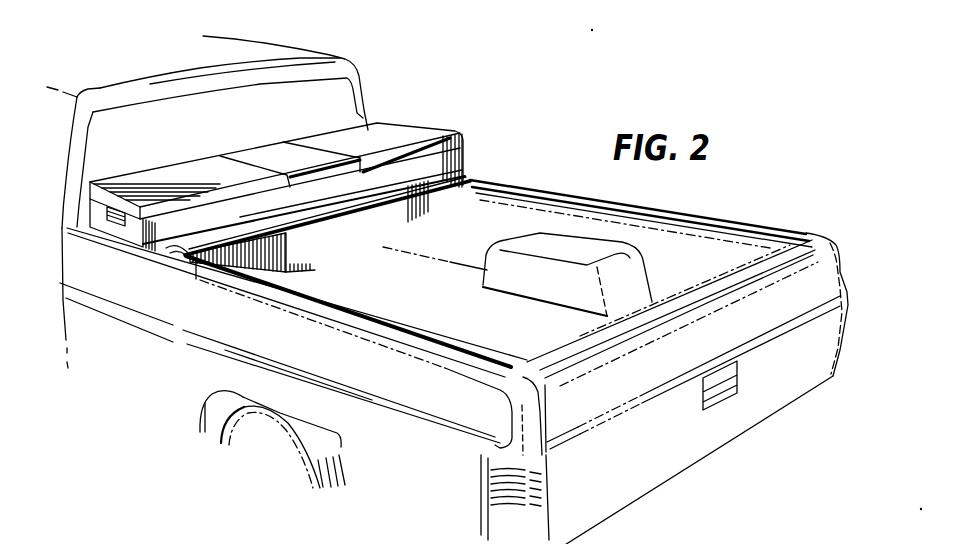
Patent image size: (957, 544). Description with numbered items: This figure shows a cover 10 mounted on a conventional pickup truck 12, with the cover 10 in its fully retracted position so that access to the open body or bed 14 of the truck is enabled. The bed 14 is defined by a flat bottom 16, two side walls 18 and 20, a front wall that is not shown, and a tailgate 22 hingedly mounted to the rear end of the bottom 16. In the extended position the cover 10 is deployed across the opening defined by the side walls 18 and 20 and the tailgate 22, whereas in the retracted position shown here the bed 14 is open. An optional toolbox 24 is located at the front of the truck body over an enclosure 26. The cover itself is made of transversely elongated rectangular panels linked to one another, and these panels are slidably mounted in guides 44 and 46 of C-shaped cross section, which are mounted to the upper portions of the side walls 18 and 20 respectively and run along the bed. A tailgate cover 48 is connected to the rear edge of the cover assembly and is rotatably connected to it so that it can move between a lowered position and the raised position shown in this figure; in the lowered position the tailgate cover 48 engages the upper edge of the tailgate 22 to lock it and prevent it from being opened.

The cover 10 is at (483, 236).
The pickup truck 12 is at (135, 378).
The open body or bed 14 is at (526, 208).
The flat bottom 16 is at (507, 333).
The side wall 18 is at (743, 233).
The side wall 20 is at (447, 423).
The tailgate 22 is at (780, 401).
The toolbox 24 is at (403, 125).
The enclosure 26 is at (322, 254).
The guide 44 is at (383, 318).
The guide 46 is at (573, 195).
The tailgate cover 48 is at (196, 280).